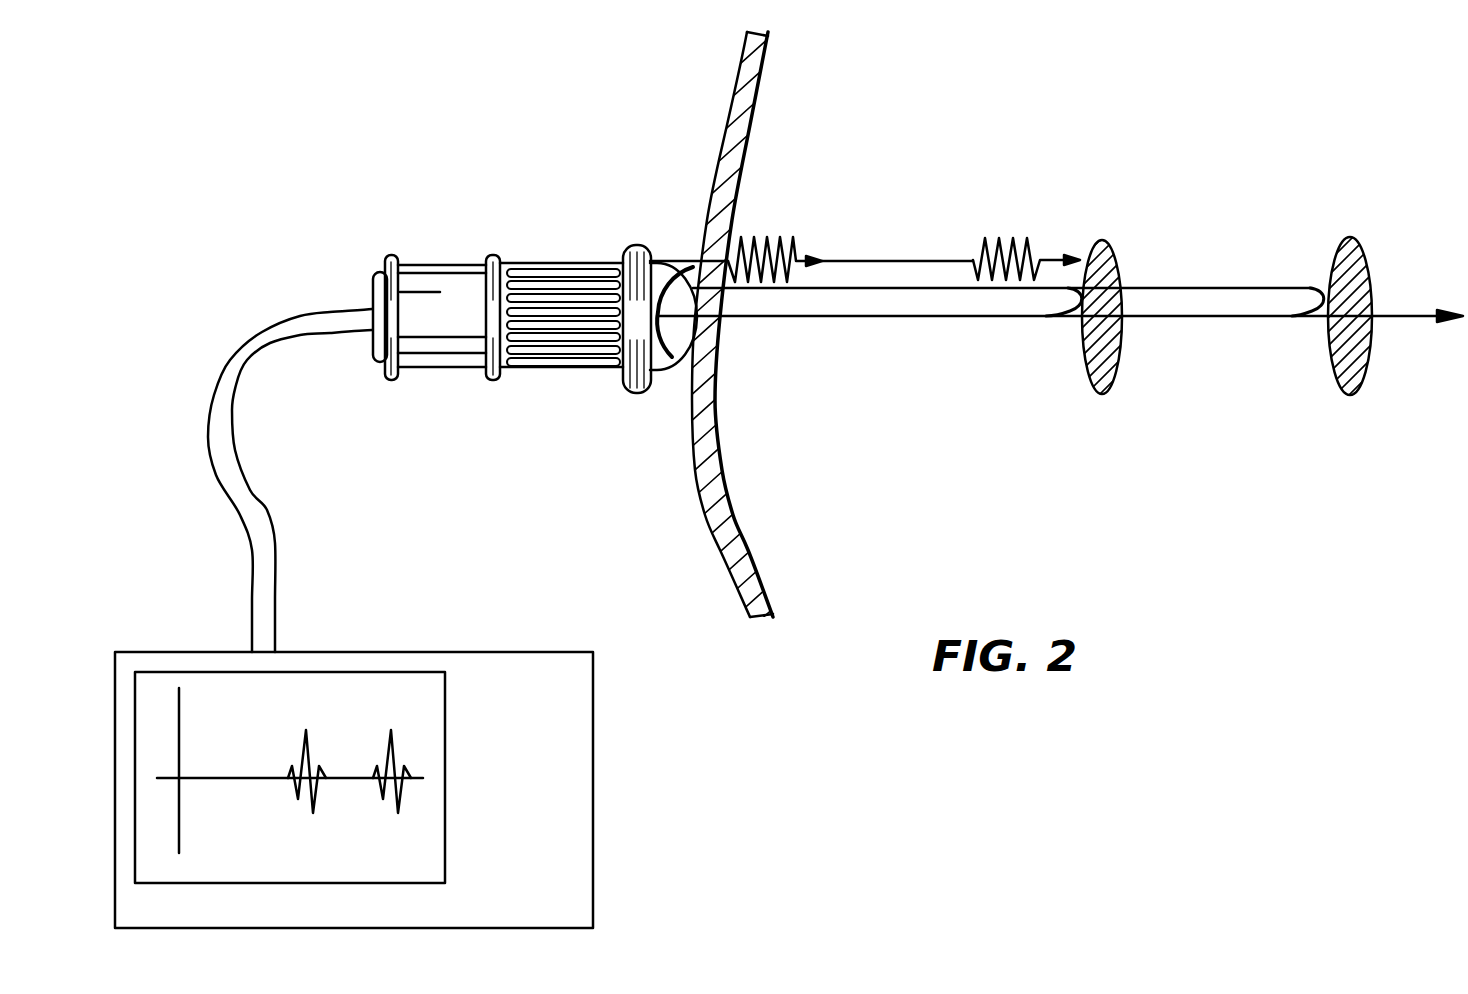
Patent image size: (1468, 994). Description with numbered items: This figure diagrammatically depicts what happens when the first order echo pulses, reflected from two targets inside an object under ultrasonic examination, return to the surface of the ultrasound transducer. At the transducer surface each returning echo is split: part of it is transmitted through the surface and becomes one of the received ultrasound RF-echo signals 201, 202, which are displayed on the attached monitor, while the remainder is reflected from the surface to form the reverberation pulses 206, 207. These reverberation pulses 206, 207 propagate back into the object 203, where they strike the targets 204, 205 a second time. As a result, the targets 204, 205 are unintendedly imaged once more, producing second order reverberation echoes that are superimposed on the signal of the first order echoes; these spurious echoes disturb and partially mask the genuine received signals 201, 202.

The received ultrasound RF-echo signal 201 is at (312, 752).
The received ultrasound RF-echo signal 202 is at (394, 752).
The object 203 is at (721, 128).
The target 204 is at (1093, 245).
The target 205 is at (1340, 246).
The reverberation pulse 206 is at (796, 240).
The reverberation pulse 207 is at (1012, 238).